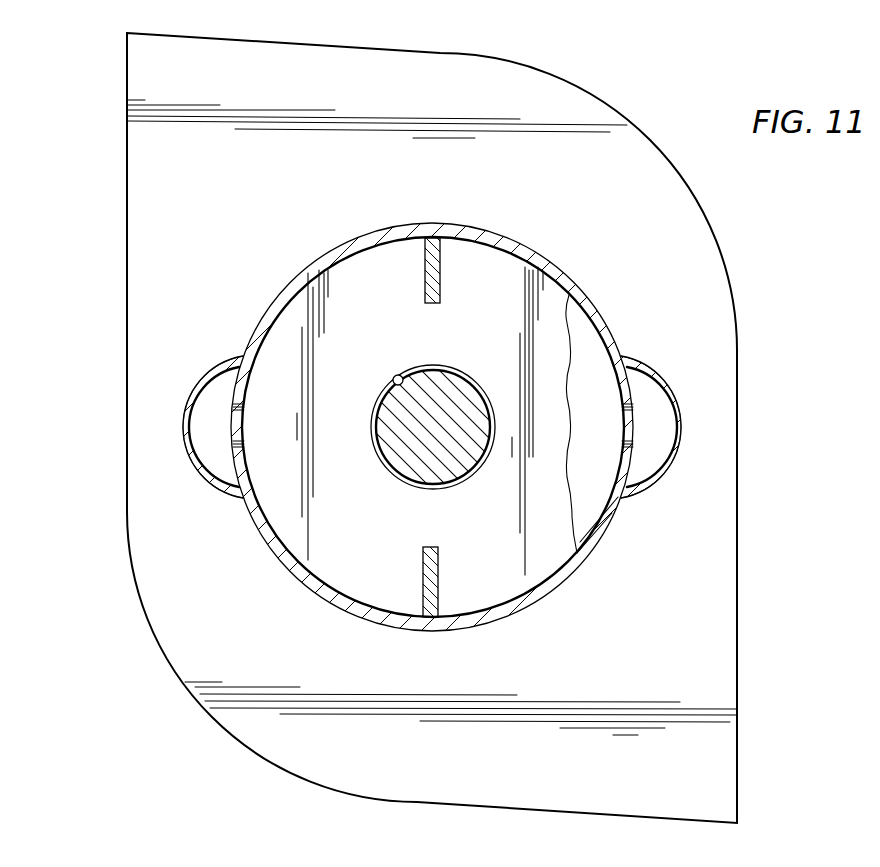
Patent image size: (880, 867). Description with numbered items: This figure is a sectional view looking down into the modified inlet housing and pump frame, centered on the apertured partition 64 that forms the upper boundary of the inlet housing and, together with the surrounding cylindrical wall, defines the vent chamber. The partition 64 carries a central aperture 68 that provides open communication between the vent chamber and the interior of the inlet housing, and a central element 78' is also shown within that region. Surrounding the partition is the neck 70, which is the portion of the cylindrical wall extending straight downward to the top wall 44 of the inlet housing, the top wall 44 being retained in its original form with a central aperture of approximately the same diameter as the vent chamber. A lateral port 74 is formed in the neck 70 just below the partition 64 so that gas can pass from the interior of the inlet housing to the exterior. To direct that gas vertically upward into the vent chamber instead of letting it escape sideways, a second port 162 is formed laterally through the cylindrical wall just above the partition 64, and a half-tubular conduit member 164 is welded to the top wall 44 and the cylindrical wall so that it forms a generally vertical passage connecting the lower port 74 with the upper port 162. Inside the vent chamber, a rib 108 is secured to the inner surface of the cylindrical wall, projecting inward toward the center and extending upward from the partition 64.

The top wall 44 is at (228, 178).
The rib 108 is at (450, 256).
The neck portion 70 is at (548, 258).
The apertured partition 64 is at (372, 524).
The shaft 78' is at (436, 416).
The aperture 68 is at (396, 375).
The second set of ports 162 is at (236, 420).
The port 74 is at (633, 451).
The half-tubular conduit member 164 is at (204, 363).